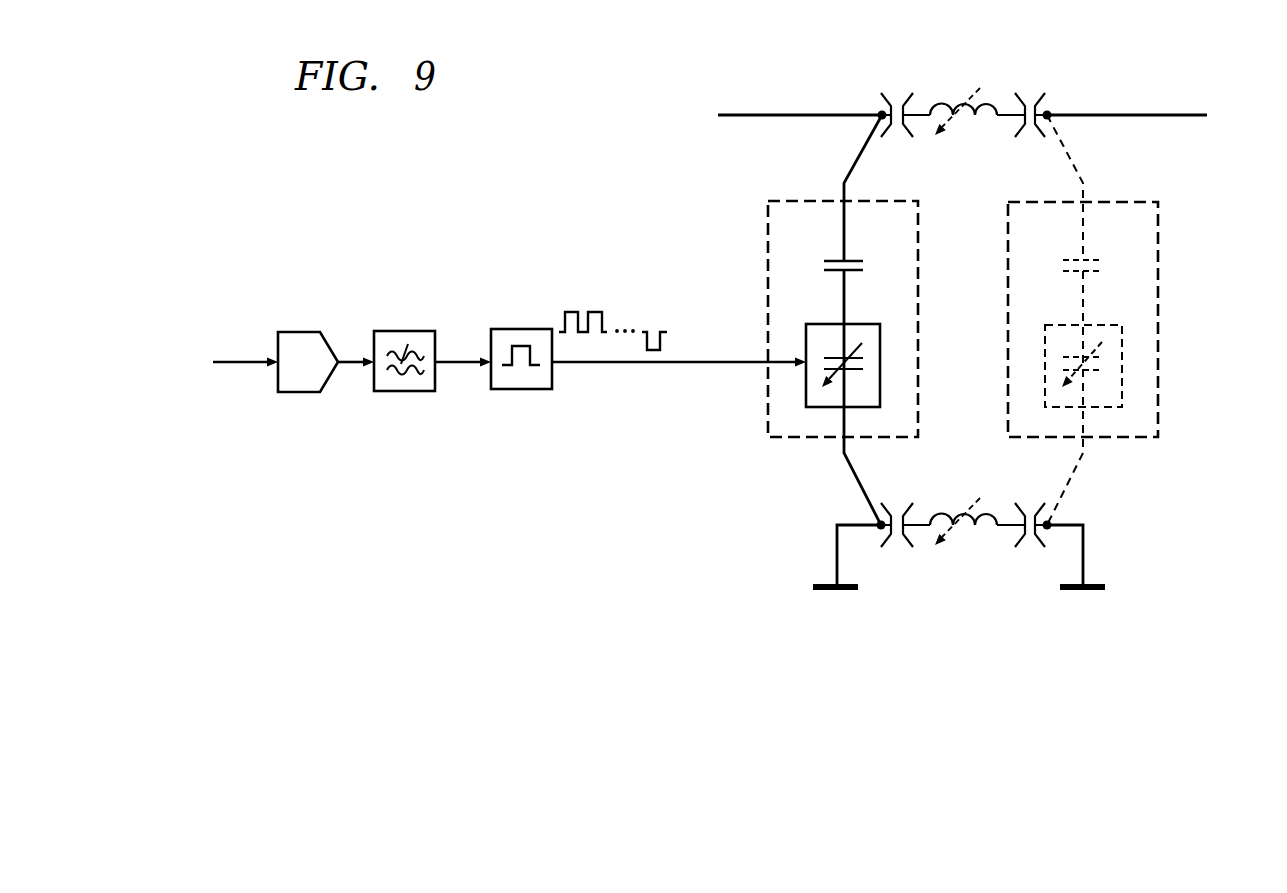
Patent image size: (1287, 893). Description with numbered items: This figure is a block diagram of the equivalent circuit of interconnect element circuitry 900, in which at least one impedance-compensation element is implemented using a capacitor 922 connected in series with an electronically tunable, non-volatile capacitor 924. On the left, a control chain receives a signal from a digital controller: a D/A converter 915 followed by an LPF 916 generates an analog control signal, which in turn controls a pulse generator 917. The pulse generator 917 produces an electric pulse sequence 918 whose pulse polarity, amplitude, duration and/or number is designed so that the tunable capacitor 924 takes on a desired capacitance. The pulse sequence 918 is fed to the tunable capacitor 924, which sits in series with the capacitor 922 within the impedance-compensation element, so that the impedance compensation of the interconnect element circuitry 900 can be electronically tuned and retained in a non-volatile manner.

The interconnect element circuitry 900 is at (382, 137).
The D/A converter 915 is at (299, 330).
The LPF 916 is at (404, 330).
The pulse generator 917 is at (522, 327).
The electric pulse sequence 918 is at (614, 366).
The capacitor 922 is at (855, 248).
The electronically tunable, non-volatile capacitor 924 is at (850, 323).